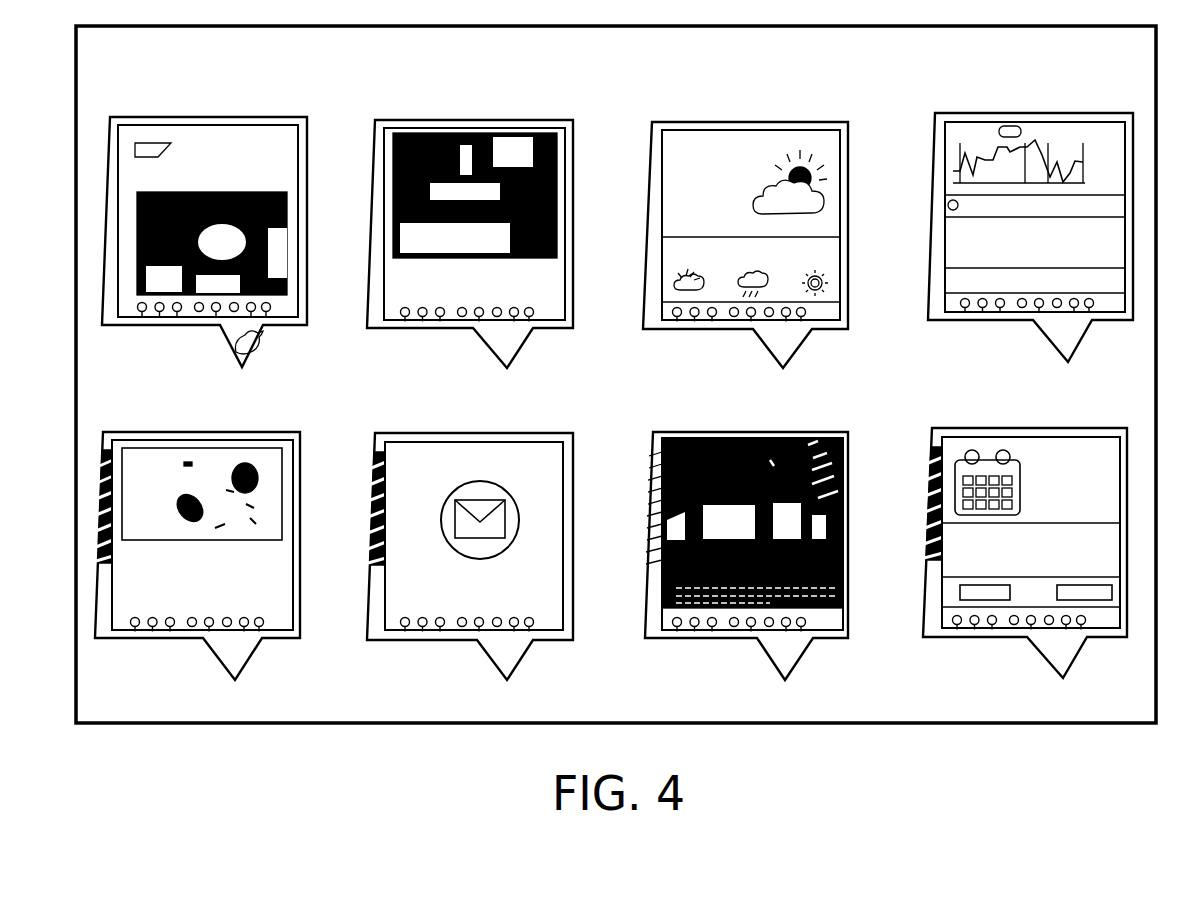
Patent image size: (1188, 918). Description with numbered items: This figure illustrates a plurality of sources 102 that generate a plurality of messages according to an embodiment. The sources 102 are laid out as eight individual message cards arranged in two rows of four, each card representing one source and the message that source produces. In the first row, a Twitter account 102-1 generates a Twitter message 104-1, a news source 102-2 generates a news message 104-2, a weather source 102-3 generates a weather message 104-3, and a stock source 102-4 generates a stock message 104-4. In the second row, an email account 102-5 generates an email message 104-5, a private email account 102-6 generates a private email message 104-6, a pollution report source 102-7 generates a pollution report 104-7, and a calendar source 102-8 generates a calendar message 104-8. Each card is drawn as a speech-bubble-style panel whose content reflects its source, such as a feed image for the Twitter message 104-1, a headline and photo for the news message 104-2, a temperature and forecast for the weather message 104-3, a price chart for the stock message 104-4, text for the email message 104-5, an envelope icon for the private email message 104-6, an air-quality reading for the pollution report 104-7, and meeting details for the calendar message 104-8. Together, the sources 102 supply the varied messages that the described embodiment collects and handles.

The sources 102 is at (617, 378).
The Twitter account 102-1 is at (330, 112).
The news source 102-2 is at (596, 115).
The weather source 102-3 is at (871, 117).
The stock source 102-4 is at (1101, 114).
The email account 102-5 is at (324, 427).
The private email account 102-6 is at (596, 428).
The pollution report source 102-7 is at (871, 427).
The calendar source 102-8 is at (1110, 426).
The Twitter message 104-1 is at (218, 261).
The news message 104-2 is at (488, 263).
The weather message 104-3 is at (778, 262).
The stock message 104-4 is at (1033, 255).
The email message 104-5 is at (209, 575).
The private email message 104-6 is at (486, 576).
The pollution report 104-7 is at (767, 574).
The calendar message 104-8 is at (1027, 571).